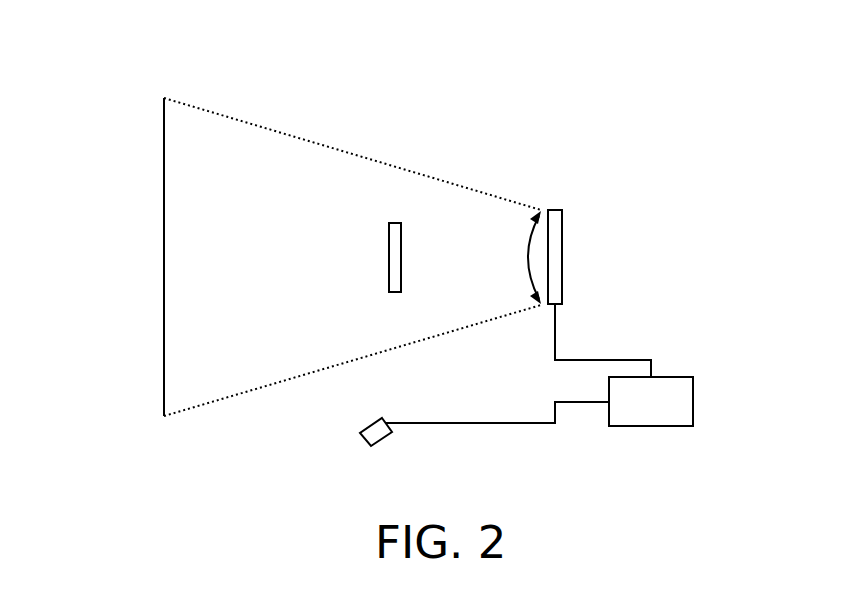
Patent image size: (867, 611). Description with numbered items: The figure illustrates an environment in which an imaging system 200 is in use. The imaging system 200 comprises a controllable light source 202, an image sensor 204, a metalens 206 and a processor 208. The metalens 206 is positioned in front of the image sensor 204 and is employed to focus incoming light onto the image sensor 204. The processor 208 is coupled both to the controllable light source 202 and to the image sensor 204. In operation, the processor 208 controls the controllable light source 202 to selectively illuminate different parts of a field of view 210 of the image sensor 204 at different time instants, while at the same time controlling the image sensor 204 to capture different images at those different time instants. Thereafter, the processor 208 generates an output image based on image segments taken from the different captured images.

The imaging system 200 is at (583, 115).
The controllable light source 202 is at (380, 438).
The image sensor 204 is at (556, 208).
The metalens 206 is at (395, 223).
The processor 208 is at (651, 401).
The field of view 210 is at (163, 111).